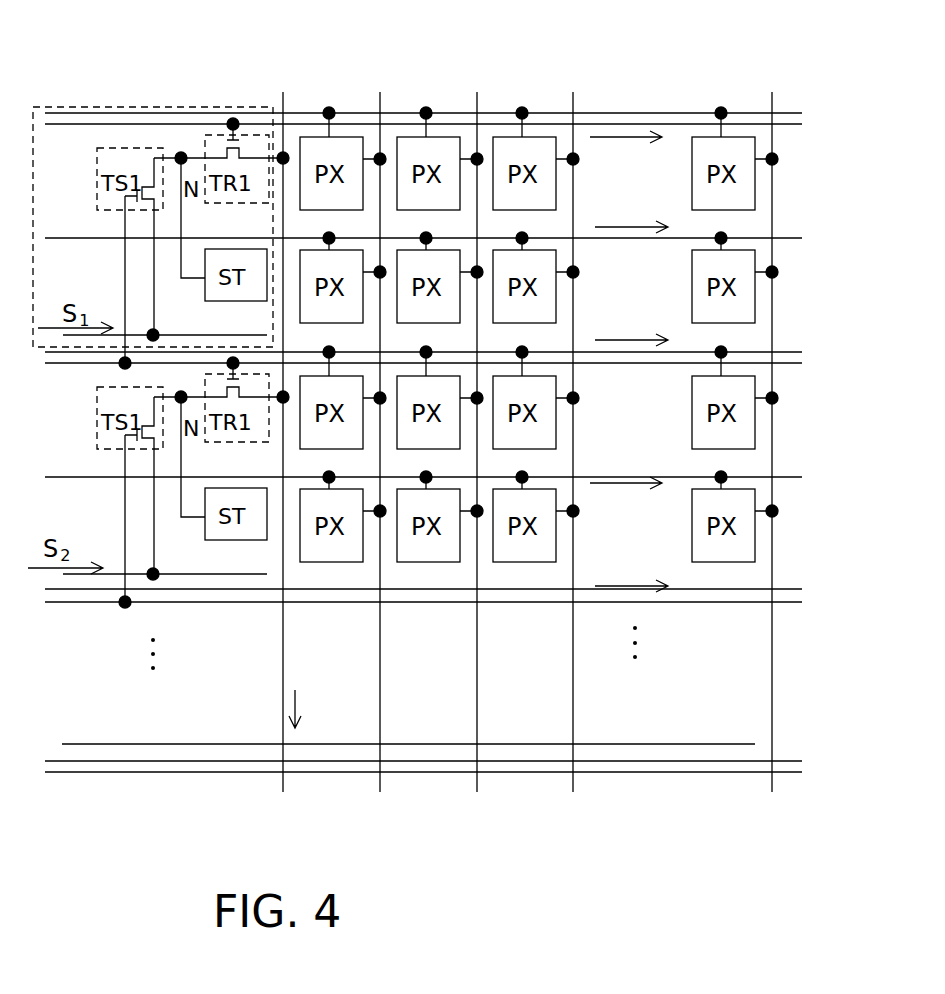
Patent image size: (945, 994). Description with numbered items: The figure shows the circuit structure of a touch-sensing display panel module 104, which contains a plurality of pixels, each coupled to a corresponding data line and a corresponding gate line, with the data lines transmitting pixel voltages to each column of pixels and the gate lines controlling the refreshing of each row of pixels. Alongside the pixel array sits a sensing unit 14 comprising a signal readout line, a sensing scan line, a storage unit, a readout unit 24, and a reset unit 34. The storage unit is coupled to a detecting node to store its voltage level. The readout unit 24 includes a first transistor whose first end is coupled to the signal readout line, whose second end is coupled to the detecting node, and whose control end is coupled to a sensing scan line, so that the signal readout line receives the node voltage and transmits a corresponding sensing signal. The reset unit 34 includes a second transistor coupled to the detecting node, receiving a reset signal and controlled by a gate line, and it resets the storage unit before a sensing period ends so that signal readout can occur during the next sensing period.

The sensing unit 14 is at (172, 107).
The readout unit 24 is at (205, 138).
The reset unit 34 is at (98, 208).
The touch-sensing display panel module 104 is at (862, 96).